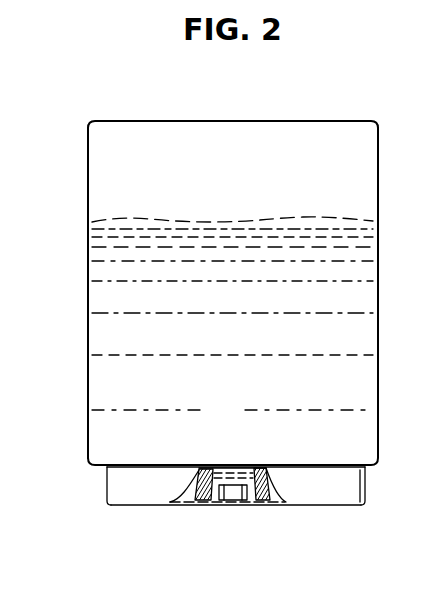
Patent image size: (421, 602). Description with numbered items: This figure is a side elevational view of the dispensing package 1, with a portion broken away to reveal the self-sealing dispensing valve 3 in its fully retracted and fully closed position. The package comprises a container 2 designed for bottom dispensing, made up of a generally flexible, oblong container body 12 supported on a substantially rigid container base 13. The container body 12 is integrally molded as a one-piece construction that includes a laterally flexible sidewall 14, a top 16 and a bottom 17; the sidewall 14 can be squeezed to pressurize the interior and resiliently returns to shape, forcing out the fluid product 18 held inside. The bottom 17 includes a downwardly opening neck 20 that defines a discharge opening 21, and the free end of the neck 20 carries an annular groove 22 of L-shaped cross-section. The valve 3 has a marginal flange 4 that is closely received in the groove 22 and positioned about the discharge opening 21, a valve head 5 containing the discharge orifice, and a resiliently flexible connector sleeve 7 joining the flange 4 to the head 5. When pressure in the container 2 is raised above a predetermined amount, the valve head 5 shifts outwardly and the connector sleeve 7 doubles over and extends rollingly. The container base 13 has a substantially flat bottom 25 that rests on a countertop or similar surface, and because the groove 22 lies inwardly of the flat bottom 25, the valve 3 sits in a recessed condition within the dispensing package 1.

The dispensing package 1 is at (284, 99).
The container 2 is at (88, 121).
The self-sealing dispensing valve 3 is at (226, 508).
The marginal flange 4 is at (253, 500).
The valve head 5 is at (246, 485).
The connector sleeve 7 is at (213, 470).
The container body 12 is at (88, 408).
The container base 13 is at (105, 505).
The sidewall 14 is at (147, 262).
The top 16 is at (205, 120).
The bottom 17 is at (104, 468).
The fluid product 18 is at (210, 222).
The neck 20 is at (192, 473).
The discharge opening 21 is at (251, 470).
The groove 22 is at (268, 488).
The flat bottom 25 is at (140, 507).